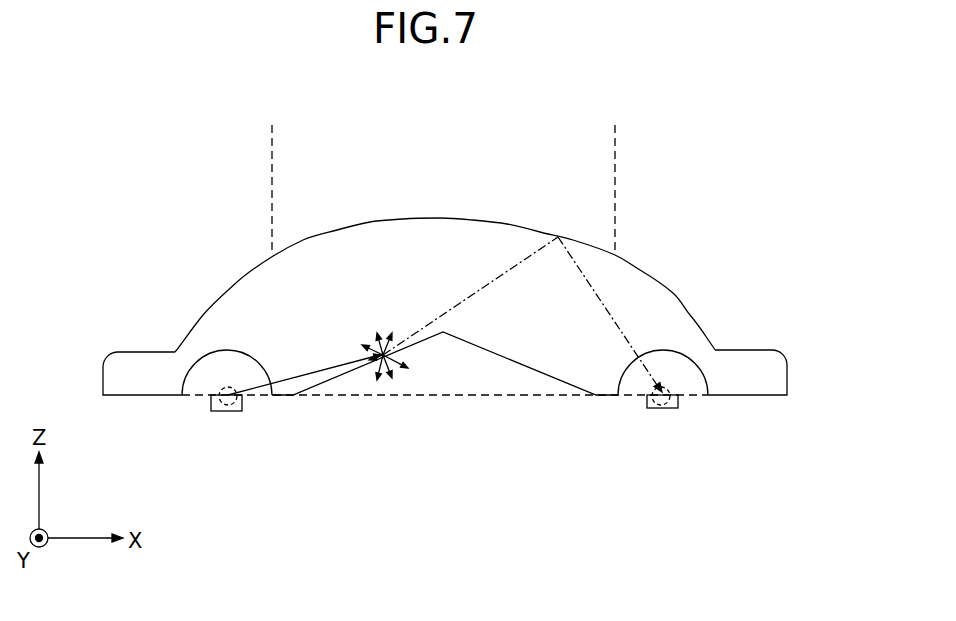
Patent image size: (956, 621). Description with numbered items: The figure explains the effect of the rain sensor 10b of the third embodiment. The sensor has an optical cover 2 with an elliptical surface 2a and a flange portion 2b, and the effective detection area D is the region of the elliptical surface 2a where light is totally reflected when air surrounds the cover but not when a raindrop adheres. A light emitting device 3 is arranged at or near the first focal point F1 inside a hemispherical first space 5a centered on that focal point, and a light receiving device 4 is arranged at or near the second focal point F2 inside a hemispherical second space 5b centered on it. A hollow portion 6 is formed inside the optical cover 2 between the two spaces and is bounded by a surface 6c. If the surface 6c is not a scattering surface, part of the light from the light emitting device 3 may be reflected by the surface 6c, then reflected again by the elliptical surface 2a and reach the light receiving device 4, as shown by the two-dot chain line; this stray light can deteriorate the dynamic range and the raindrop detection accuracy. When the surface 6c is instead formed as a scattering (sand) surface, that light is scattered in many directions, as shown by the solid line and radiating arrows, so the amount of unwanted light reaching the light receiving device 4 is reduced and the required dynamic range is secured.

The rain sensor 10b is at (197, 196).
The optical cover 2 is at (653, 292).
The elliptical surface 2a is at (517, 224).
The flange portion 2b is at (752, 357).
The light emitting device 3 is at (215, 412).
The light receiving device 4 is at (673, 409).
The first space 5a is at (203, 381).
The second space 5b is at (687, 381).
The hollow portion 6 is at (457, 368).
The surface defining the hollow portion 6c is at (338, 378).
The first focal point F1 is at (233, 403).
The second focal point F2 is at (647, 403).
The effective detection area D is at (607, 143).